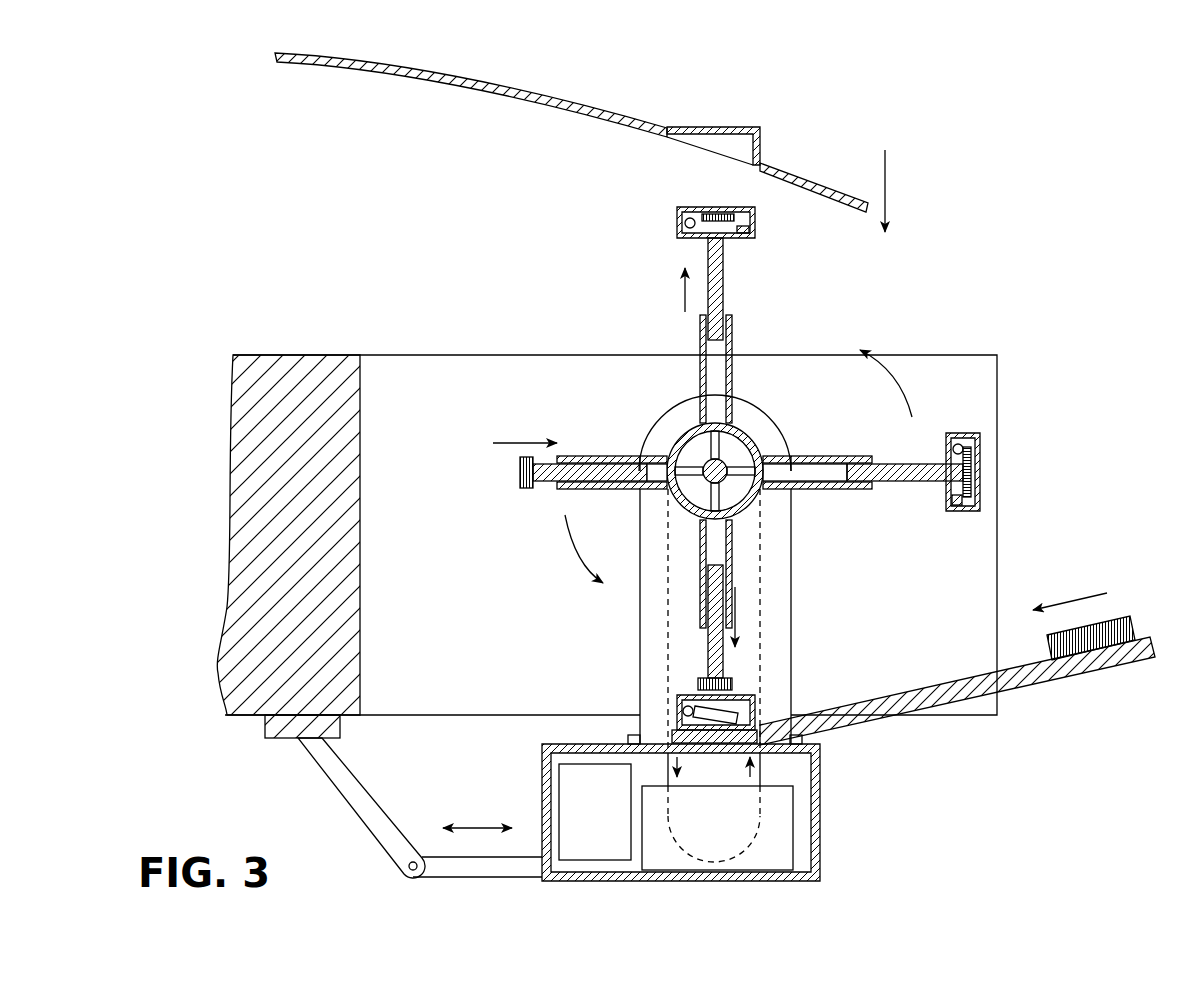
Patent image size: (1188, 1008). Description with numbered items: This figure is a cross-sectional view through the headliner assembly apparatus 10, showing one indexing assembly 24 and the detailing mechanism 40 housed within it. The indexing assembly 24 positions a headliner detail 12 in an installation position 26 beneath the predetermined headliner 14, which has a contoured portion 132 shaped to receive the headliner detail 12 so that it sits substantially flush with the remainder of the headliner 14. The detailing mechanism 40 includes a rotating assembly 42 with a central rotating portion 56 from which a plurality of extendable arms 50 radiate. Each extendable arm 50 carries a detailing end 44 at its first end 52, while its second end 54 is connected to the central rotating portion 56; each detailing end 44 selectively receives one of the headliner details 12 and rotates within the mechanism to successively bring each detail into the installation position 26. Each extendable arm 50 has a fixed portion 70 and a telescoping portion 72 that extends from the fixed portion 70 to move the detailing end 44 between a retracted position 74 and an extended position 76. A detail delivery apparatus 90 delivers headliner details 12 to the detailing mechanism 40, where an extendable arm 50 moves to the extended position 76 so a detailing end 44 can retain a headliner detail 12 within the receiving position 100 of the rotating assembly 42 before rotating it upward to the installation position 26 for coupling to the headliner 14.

The headliner assembly apparatus 10 is at (243, 182).
The headliner detail 12 is at (687, 217).
The predetermined headliner 14 is at (568, 90).
The contoured portion 132 is at (747, 128).
The indexing assembly 24 is at (1017, 350).
The installation position 26 is at (763, 240).
The detailing mechanism 40 is at (778, 607).
The rotating assembly 42 is at (753, 442).
The detailing end 44 is at (710, 240).
The extendable arm 50 is at (743, 342).
The first end 52 is at (978, 470).
The second end 54 is at (720, 412).
The central rotating portion 56 is at (680, 432).
The fixed portion 70 is at (828, 490).
The telescoping portion 72 is at (898, 484).
The retracted position 74 is at (543, 490).
The extended position 76 is at (690, 327).
The detail delivery apparatus 90 is at (1033, 675).
The receiving position 100 is at (683, 648).